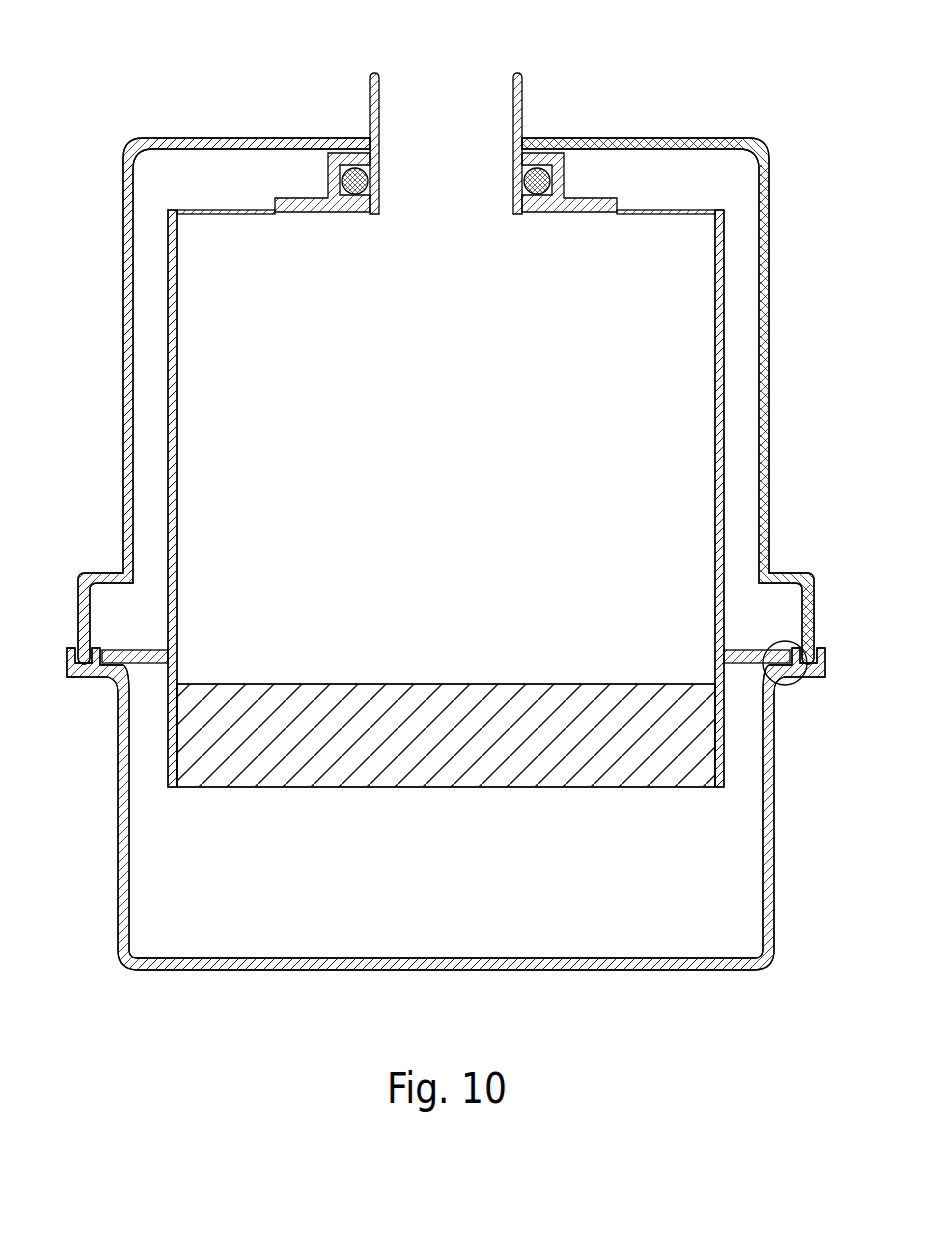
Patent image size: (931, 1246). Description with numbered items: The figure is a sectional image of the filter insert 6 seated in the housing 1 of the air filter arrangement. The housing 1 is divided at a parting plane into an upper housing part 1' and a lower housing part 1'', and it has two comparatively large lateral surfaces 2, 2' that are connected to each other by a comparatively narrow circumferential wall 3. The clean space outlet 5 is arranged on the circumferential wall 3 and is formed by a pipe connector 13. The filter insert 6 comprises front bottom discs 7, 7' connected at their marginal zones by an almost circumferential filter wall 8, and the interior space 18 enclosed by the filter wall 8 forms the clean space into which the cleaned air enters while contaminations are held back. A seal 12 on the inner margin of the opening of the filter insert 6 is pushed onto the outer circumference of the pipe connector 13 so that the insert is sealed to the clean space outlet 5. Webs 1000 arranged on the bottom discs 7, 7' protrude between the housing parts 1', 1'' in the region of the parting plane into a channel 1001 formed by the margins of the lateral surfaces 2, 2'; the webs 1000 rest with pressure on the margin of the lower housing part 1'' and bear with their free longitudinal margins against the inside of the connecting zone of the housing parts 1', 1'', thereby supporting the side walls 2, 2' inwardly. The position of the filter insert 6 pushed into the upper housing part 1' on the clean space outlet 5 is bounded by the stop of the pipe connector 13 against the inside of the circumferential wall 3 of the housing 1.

The housing 1 is at (446, 515).
The upper housing part 1' is at (443, 401).
The lower housing part 1'' is at (446, 809).
The lateral surface 2 is at (104, 369).
The lateral surface 2' is at (790, 369).
The circumferential wall 3 is at (312, 138).
The clean space outlet 5 is at (436, 100).
The filter insert 6 is at (670, 372).
The bottom disc 7 is at (132, 498).
The bottom disc 7' is at (761, 498).
The filter wall 8 is at (400, 787).
The seal 12 is at (360, 183).
The pipe connector 13 is at (327, 190).
The interior space 18 is at (502, 419).
The web 1000 is at (137, 668).
The channel 1001 is at (92, 631).